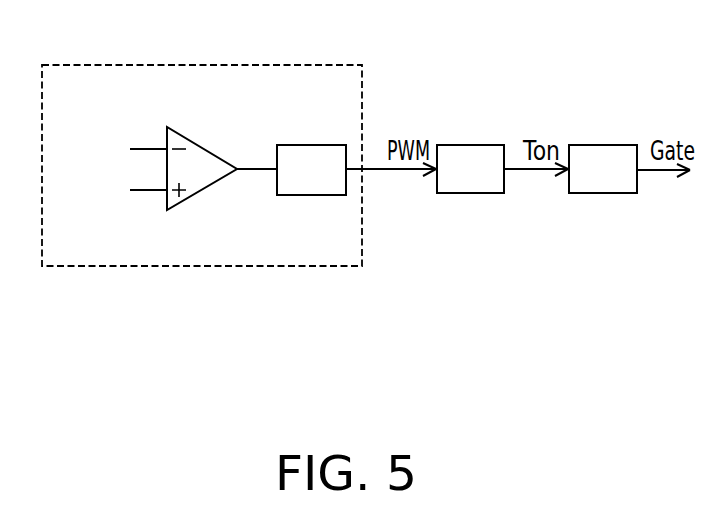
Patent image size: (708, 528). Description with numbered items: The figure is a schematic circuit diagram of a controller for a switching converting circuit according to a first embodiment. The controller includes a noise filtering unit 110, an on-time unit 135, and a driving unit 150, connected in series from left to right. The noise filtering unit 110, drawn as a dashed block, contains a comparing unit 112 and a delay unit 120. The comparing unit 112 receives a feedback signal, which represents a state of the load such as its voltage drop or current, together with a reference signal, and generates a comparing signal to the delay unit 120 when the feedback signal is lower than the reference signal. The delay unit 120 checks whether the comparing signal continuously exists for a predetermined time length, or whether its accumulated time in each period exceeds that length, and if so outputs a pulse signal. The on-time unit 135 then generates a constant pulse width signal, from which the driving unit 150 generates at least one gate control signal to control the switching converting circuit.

The noise filtering unit 110 is at (330, 73).
The comparing unit 112 is at (204, 153).
The delay unit 120 is at (333, 186).
The on-time unit 135 is at (492, 186).
The driving unit 150 is at (622, 186).